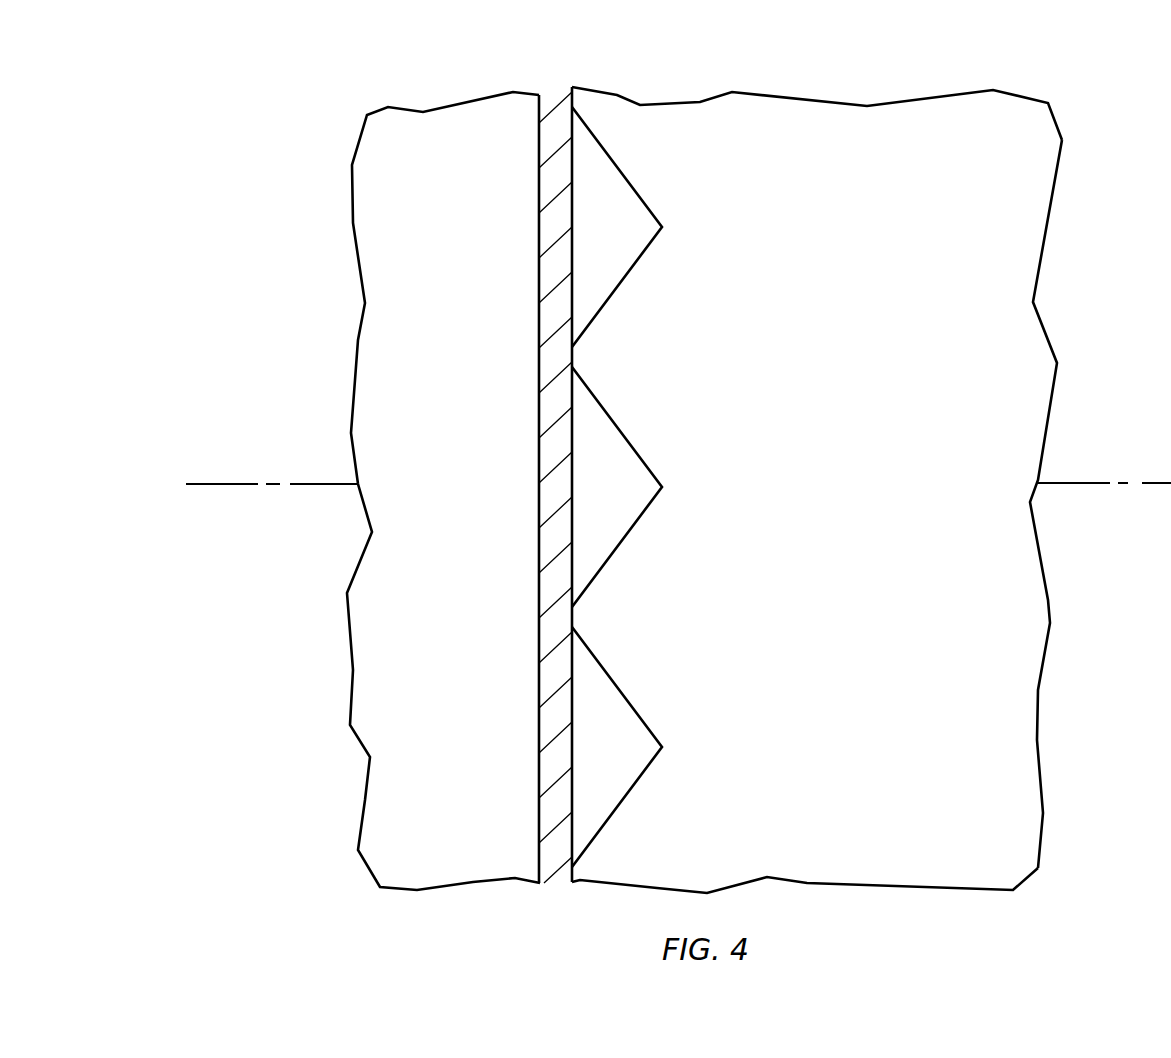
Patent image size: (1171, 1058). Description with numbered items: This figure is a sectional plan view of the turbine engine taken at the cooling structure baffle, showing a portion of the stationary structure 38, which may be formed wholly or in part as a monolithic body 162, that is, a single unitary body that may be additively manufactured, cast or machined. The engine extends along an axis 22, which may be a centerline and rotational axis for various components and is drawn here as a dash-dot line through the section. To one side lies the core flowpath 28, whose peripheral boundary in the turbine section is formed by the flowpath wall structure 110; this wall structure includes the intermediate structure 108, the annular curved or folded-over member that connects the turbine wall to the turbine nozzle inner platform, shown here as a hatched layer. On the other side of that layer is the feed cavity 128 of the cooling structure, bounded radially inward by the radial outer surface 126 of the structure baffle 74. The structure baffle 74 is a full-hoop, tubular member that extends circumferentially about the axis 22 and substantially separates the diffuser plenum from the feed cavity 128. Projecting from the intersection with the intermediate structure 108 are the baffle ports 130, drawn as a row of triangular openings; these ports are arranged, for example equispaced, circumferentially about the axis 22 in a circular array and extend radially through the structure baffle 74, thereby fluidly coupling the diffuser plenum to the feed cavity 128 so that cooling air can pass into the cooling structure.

The axis 22 is at (201, 485).
The core flowpath 28 is at (440, 540).
The stationary structure 38 is at (752, 493).
The monolithic body 162 is at (752, 493).
The structure baffle 74 is at (805, 888).
The intermediate structure 108 is at (472, 485).
The flowpath wall structure 110 is at (522, 646).
The radial outer surface 126 is at (1017, 712).
The feed cavity 128 is at (830, 565).
The baffle ports 130 is at (625, 239).